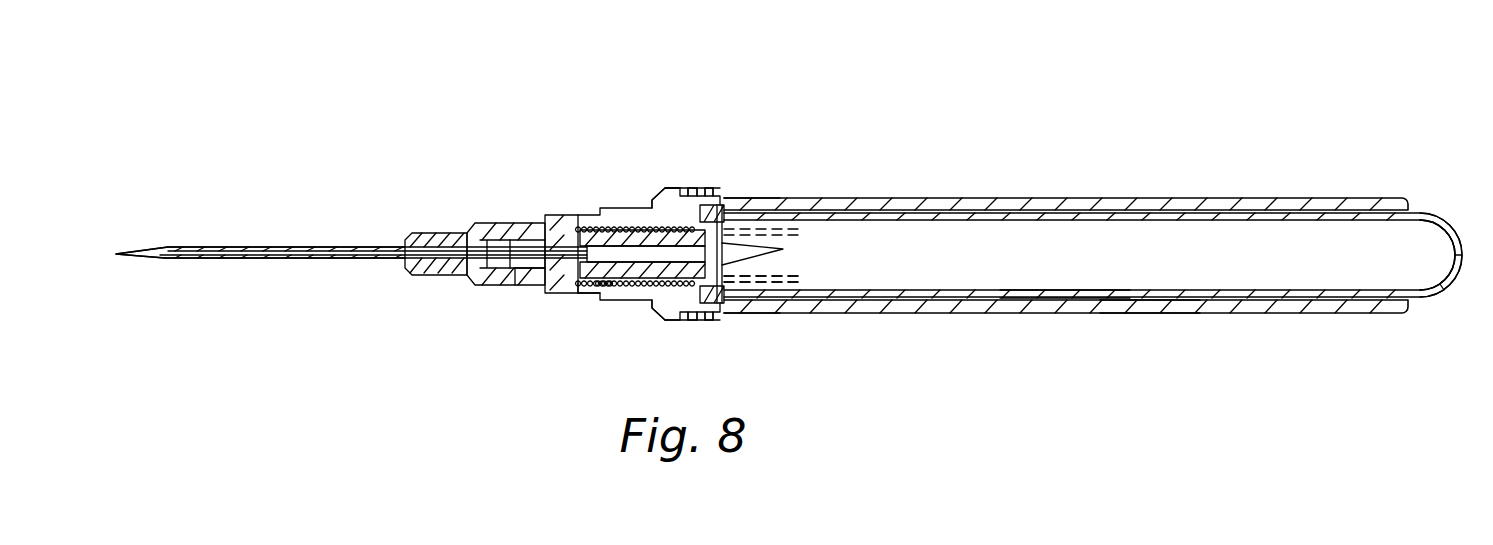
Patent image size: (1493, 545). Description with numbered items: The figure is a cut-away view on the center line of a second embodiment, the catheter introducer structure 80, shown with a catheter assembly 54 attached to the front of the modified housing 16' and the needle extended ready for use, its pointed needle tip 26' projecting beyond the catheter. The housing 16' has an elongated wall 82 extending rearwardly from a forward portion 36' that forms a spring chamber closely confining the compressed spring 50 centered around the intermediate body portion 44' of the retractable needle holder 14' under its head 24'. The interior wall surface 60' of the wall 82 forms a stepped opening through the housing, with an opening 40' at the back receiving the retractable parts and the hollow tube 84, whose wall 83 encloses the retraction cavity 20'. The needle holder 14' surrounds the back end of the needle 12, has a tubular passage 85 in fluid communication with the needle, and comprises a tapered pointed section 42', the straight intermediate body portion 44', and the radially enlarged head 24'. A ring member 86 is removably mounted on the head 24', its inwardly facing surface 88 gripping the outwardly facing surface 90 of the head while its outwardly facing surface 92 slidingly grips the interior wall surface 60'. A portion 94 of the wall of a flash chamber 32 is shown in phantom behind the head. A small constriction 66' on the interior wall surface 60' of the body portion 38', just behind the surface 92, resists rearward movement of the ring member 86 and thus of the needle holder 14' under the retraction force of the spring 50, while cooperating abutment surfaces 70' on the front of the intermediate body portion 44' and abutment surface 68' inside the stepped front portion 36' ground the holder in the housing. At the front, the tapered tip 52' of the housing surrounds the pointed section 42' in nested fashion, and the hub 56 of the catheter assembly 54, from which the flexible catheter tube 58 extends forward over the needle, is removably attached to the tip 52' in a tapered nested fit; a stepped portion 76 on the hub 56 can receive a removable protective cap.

The needle 12 is at (500, 260).
The retractable needle holder 14' is at (575, 325).
The housing 16' is at (635, 153).
The retraction cavity 20' is at (1325, 255).
The head 24' is at (781, 230).
The needle tip 26' is at (143, 212).
The flash chamber 32 is at (827, 315).
The forward portion 36' is at (632, 218).
The body portion 38' is at (753, 217).
The opening 40' is at (1444, 279).
The pointed section 42' is at (470, 299).
The intermediate body portion 44' is at (642, 212).
The spring 50 is at (640, 262).
The tip 52' is at (531, 213).
The catheter assembly 54 is at (328, 214).
The hub 56 is at (477, 232).
The catheter tube 58 is at (253, 246).
The interior wall surface 60' is at (1121, 328).
The constriction 66' is at (754, 221).
The abutment surface 68' is at (613, 222).
The abutment surfaces 70' is at (524, 313).
The stepped portion 76 is at (425, 236).
The catheter introducer structure 80 is at (702, 70).
The elongated wall 82 is at (1040, 198).
The wall 83 is at (1060, 290).
The hollow tube 84 is at (1167, 205).
The tubular passage 85 is at (606, 285).
The ring member 86 is at (665, 303).
The inwardly facing surface 88 is at (783, 249).
The outwardly facing surface 90 is at (708, 200).
The outwardly facing surface 92 is at (689, 200).
The wall portion 94 is at (795, 283).